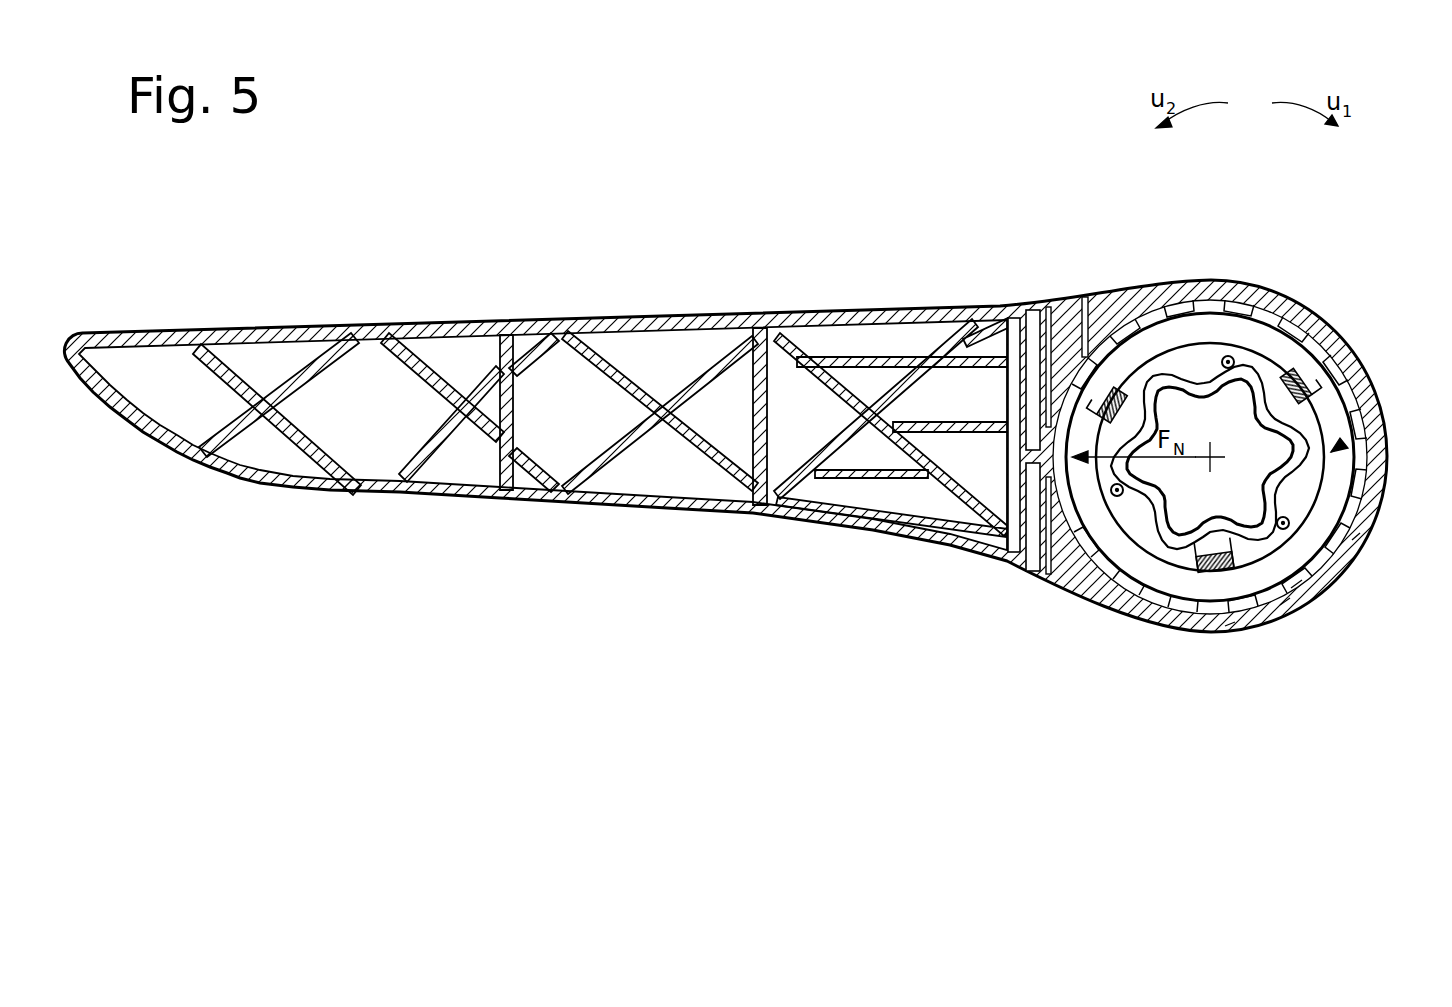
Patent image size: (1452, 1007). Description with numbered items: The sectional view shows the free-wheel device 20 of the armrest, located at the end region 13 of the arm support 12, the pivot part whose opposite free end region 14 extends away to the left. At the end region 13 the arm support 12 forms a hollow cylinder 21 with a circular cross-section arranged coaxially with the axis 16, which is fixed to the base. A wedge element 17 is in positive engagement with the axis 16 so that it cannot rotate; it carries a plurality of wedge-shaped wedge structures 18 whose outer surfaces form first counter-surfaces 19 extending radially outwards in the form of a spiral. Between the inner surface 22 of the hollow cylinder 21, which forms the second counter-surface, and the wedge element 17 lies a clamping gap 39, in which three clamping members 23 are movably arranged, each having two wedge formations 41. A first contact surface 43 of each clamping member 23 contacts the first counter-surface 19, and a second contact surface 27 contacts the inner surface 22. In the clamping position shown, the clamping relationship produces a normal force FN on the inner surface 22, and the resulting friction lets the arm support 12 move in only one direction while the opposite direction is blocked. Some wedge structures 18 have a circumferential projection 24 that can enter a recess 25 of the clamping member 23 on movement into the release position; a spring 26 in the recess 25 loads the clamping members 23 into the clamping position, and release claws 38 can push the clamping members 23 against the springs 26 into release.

The arm support 12 is at (473, 345).
The end region 13 is at (1101, 286).
The free end region 14 is at (97, 332).
The axis 16 is at (1063, 558).
The wedge element 17 is at (1295, 590).
The wedge structures 18 is at (1134, 385).
The first counter-surface 19 is at (1040, 545).
The free-wheel device 20 is at (1342, 368).
The hollow cylinder 21 is at (1345, 352).
The inner surface 22 is at (1268, 338).
The clamping member 23 is at (1355, 538).
The projection 24 is at (1160, 618).
The recess 25 is at (1228, 625).
The spring 26 is at (1283, 605).
The second contact surface 27 is at (1180, 330).
The release claws 38 is at (1110, 560).
The clamping gap 39 is at (1345, 570).
The wedge formation 41 is at (1338, 450).
The first contact surface 43 is at (1090, 563).